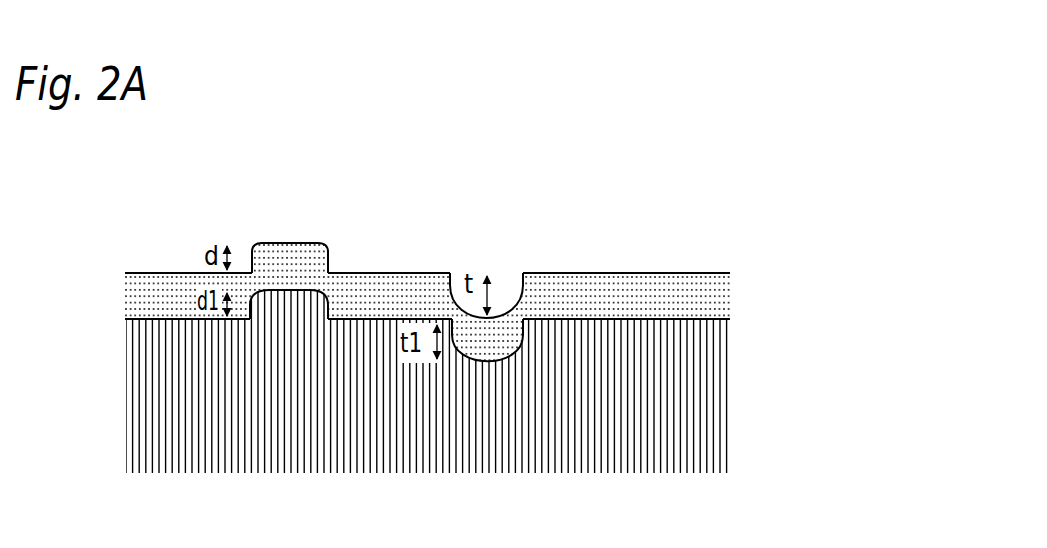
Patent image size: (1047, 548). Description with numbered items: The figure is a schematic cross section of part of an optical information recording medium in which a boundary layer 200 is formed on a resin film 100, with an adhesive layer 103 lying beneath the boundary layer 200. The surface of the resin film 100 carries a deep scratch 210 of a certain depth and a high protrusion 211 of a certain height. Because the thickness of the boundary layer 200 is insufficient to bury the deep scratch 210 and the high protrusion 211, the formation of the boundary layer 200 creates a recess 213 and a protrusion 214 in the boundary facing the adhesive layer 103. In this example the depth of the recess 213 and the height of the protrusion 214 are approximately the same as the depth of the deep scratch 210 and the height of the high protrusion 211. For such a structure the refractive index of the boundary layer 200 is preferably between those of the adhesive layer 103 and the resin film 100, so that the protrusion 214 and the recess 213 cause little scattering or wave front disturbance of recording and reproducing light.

The resin film 100 is at (620, 255).
The adhesive layer 103 is at (685, 389).
The boundary layer 200 is at (700, 302).
The deep scratch 210 is at (290, 243).
The high protrusion 211 is at (490, 293).
The recess 213 is at (258, 252).
The protrusion 214 is at (510, 355).